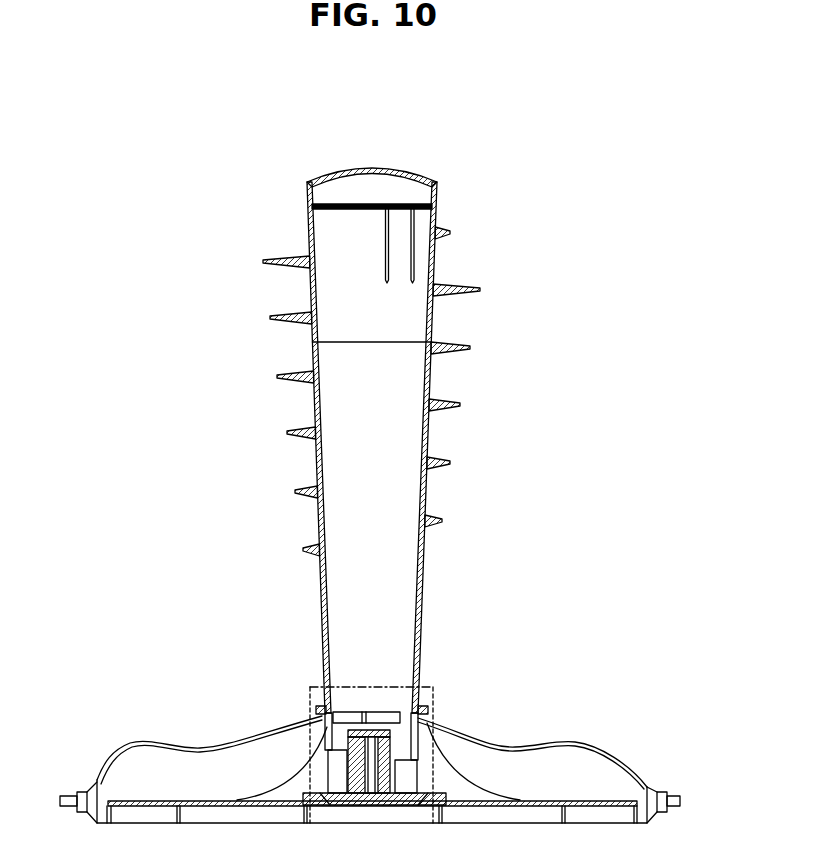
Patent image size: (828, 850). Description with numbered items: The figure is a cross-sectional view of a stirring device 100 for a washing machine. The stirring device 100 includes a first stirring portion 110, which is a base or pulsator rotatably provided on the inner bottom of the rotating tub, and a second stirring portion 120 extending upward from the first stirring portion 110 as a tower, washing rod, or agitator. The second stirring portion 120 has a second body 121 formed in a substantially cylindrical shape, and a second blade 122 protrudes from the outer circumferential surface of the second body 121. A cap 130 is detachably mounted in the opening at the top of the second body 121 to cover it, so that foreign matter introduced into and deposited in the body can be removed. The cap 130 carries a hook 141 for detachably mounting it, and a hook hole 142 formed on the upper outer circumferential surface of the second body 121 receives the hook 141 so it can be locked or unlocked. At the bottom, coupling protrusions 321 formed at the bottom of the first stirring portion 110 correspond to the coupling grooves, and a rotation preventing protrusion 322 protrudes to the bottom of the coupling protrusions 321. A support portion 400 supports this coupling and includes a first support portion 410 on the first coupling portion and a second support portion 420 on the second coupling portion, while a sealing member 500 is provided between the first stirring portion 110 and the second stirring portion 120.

The stirring device 100 is at (184, 131).
The first stirring portion 110 is at (370, 752).
The second stirring portion 120 is at (416, 447).
The second body 121 is at (437, 253).
The second blade 122 is at (482, 290).
The cap 130 is at (372, 203).
The hook 141 is at (437, 203).
The hook hole 142 is at (307, 196).
The coupling protrusions 321 is at (320, 723).
The rotation preventing protrusion 322 is at (445, 753).
The support portion 400 is at (381, 741).
The first support portion 410 is at (432, 719).
The second support portion 420 is at (326, 710).
The sealing member 500 is at (422, 712).